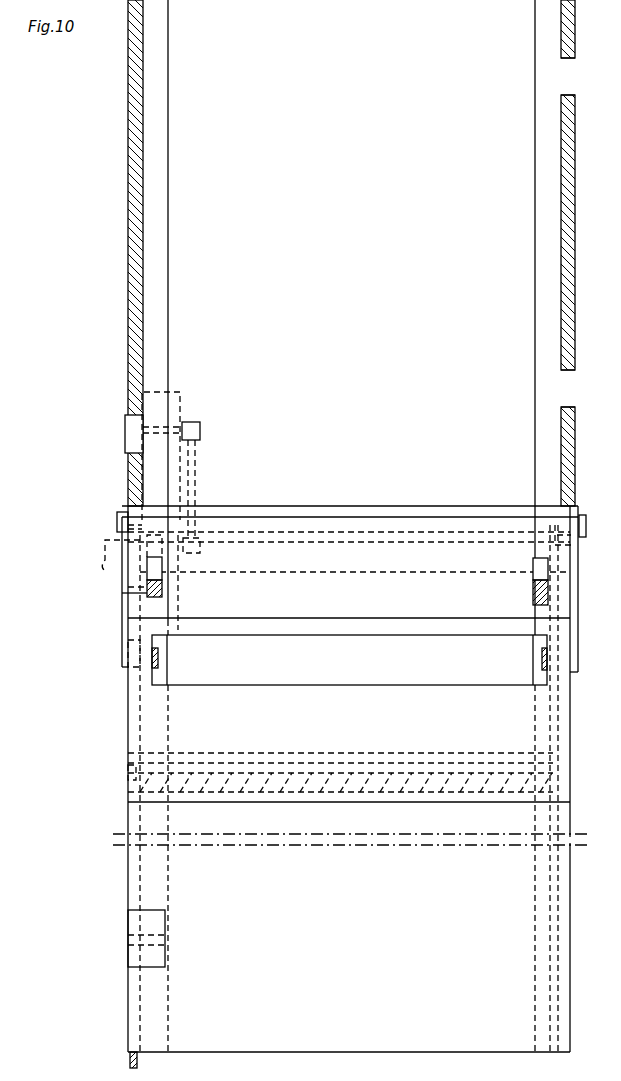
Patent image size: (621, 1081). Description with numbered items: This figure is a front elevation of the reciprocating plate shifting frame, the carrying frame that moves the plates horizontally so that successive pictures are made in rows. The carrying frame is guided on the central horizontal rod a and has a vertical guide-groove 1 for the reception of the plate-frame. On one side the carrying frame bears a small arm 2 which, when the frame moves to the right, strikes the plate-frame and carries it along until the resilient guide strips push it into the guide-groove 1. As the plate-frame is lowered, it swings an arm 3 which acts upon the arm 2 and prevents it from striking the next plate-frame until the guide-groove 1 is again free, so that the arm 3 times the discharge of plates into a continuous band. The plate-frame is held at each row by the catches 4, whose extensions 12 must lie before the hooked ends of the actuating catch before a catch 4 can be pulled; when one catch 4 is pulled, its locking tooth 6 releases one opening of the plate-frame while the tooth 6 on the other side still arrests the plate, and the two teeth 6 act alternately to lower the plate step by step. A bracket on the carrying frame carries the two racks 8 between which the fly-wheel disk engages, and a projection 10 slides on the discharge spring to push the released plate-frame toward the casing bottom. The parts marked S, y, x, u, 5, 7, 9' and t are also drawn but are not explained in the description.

The vertical guide-groove 1 is at (351, 317).
The slot S is at (574, 82).
The small arm 2 is at (125, 430).
The guide y is at (162, 456).
The rod x is at (197, 470).
The stud u is at (117, 515).
The arm 5 is at (127, 552).
The central horizontal rod a is at (108, 568).
The arm 3 is at (154, 557).
The extension 12 is at (160, 567).
The catch 4 is at (162, 590).
The locking tooth 6 is at (158, 657).
The bar 7 is at (128, 773).
The rack 8 is at (326, 780).
The slide 9' is at (146, 938).
The projection 10 is at (137, 1060).
The lever t is at (598, 589).